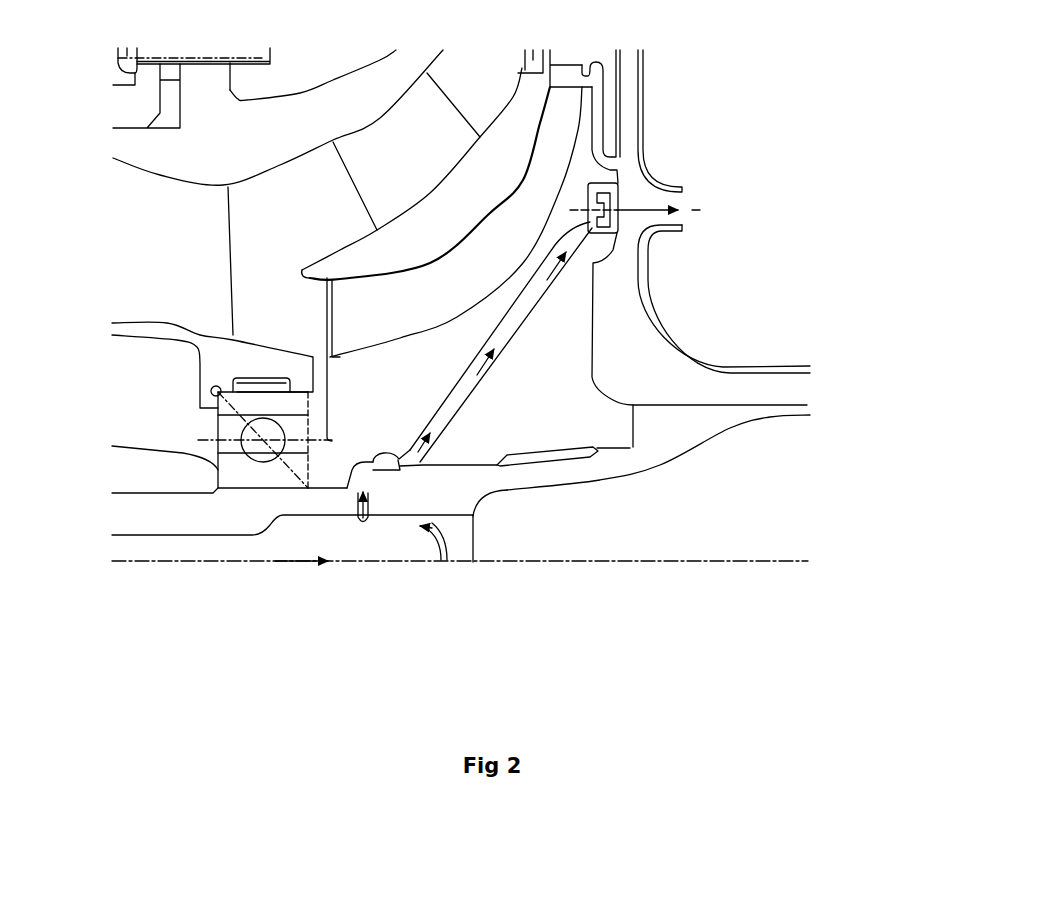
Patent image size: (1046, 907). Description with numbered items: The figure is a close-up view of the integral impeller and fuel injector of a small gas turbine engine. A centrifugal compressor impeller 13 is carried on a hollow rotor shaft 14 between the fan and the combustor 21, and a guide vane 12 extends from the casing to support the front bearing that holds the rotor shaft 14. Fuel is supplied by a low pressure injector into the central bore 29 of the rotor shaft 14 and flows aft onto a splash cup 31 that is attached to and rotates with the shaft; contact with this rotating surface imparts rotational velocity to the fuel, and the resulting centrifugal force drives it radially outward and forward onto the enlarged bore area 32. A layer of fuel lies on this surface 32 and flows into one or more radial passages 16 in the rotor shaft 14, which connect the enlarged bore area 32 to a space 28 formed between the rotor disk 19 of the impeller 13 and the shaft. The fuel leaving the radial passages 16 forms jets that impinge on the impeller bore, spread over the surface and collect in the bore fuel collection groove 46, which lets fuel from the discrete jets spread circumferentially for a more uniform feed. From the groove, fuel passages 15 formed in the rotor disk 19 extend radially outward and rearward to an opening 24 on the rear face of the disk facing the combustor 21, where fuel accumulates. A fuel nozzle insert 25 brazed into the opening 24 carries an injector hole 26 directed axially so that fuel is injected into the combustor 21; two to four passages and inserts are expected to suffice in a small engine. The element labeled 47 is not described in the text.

The guide vane 12 is at (177, 242).
The centrifugal compressor impeller 13 is at (410, 300).
The rotor shaft 14 is at (205, 522).
The fuel passages 15 is at (527, 317).
The radial passages 16 is at (362, 490).
The rotor disk 19 is at (540, 374).
The combustor 21 is at (766, 228).
The opening 24 is at (600, 210).
The fuel nozzle insert 25 is at (615, 205).
The injector hole 26 is at (617, 212).
The space 28 is at (378, 478).
The central bore 29 is at (177, 537).
The splash cup 31 is at (460, 523).
The enlarged bore area 32 is at (292, 522).
The bore fuel collection groove 46 is at (380, 460).
The nozzle orifice 47 is at (357, 466).